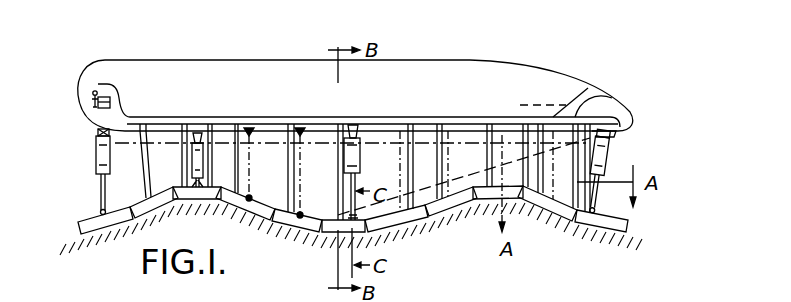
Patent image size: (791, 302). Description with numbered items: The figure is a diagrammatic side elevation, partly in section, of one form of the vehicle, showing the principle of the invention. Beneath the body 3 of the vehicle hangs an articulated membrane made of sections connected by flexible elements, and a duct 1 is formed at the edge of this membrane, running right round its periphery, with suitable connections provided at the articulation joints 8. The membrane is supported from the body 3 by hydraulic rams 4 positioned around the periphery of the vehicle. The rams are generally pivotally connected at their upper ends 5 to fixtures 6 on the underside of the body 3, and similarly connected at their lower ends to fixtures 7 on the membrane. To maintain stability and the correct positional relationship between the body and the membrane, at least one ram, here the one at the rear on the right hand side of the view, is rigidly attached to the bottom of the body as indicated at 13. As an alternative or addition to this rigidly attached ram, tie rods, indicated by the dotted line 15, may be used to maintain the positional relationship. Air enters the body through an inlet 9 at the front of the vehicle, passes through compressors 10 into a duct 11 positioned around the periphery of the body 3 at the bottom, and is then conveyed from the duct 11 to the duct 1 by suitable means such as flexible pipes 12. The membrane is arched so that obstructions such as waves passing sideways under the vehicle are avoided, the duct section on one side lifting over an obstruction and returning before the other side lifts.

The duct 1 is at (80, 227).
The body 3 is at (533, 80).
The hydraulic rams 4 is at (200, 199).
The upper ends 5 is at (203, 128).
The fixtures 6 is at (297, 118).
The fixtures 7 is at (352, 205).
The articulation joints 8 is at (297, 223).
The inlet 9 is at (85, 98).
The compressors 10 is at (100, 92).
The duct 11 is at (172, 118).
The flexible pipes 12 is at (128, 175).
The rigid attachment 13 is at (617, 133).
The tie rods 15 is at (465, 165).